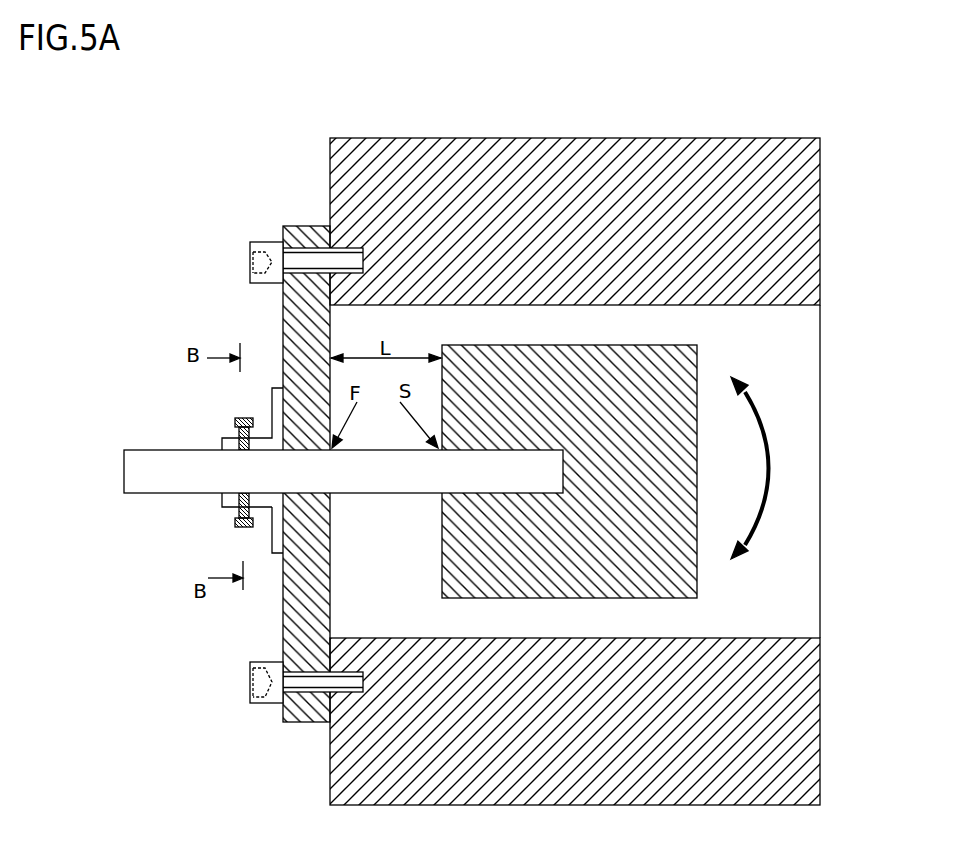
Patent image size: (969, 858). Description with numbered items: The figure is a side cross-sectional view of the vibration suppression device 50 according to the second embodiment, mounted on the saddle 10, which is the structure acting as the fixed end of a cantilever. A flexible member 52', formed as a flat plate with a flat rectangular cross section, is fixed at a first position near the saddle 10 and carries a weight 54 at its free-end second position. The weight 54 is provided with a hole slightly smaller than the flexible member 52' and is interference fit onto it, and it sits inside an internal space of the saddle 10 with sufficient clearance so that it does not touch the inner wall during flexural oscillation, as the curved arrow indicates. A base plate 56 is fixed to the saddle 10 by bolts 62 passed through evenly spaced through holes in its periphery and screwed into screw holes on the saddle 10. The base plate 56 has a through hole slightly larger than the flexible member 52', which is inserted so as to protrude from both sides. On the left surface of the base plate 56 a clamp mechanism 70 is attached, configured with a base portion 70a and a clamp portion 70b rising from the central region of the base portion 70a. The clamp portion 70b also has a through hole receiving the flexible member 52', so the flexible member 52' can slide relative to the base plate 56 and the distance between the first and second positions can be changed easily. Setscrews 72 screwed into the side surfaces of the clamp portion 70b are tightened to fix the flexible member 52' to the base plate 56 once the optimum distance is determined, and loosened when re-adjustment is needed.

The saddle 10 is at (782, 250).
The vibration suppression device 50 is at (254, 504).
The flexible member 52' is at (343, 443).
The weight 54 is at (633, 582).
The base plate 56 is at (295, 606).
The bolts 62 is at (278, 272).
The clamp mechanism 70 is at (264, 395).
The base portion 70a is at (270, 541).
The clamp portion 70b is at (232, 506).
The setscrew 72 is at (243, 417).